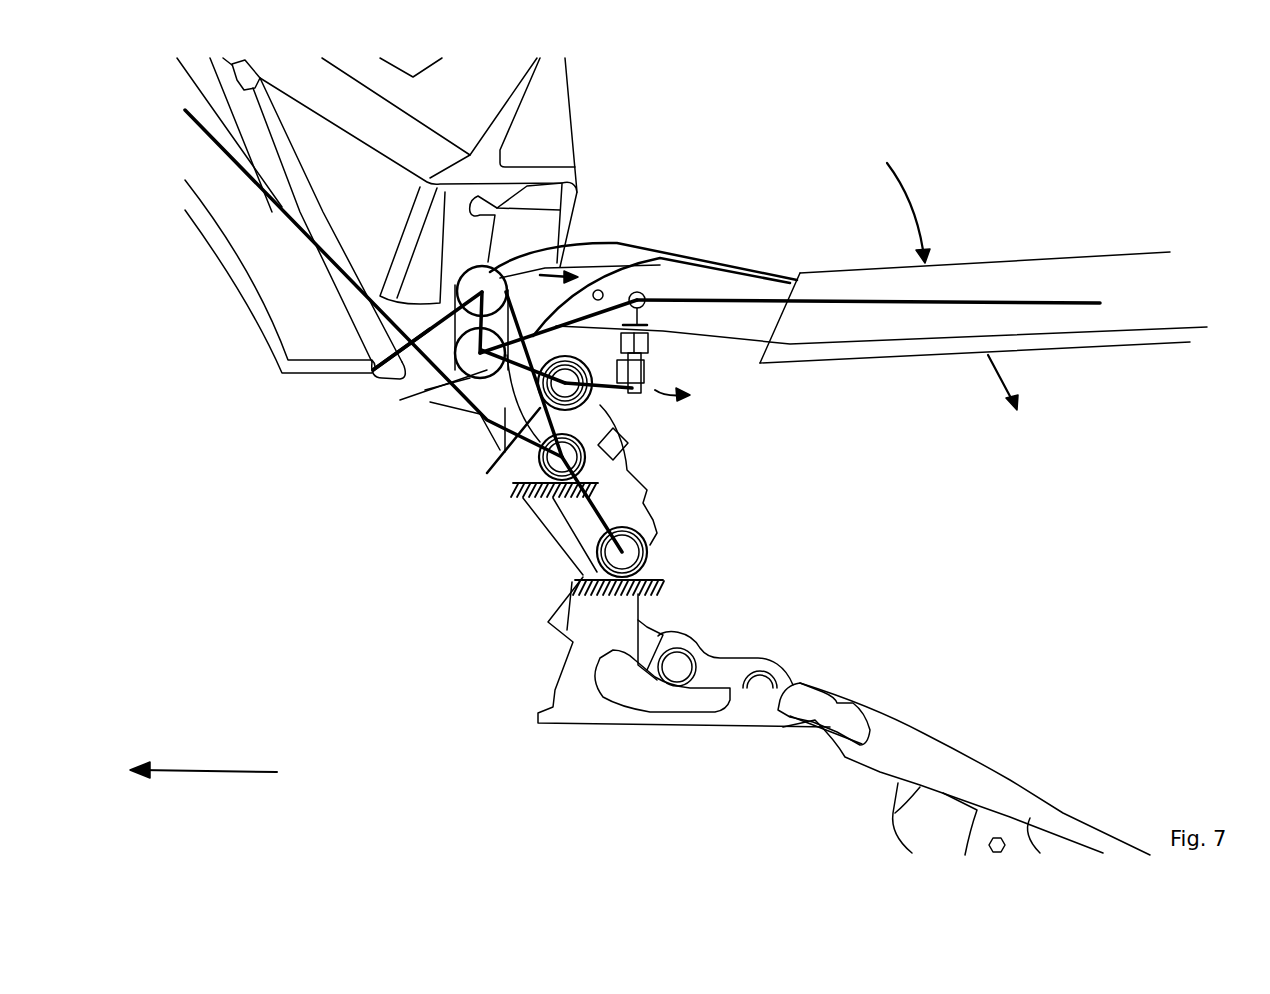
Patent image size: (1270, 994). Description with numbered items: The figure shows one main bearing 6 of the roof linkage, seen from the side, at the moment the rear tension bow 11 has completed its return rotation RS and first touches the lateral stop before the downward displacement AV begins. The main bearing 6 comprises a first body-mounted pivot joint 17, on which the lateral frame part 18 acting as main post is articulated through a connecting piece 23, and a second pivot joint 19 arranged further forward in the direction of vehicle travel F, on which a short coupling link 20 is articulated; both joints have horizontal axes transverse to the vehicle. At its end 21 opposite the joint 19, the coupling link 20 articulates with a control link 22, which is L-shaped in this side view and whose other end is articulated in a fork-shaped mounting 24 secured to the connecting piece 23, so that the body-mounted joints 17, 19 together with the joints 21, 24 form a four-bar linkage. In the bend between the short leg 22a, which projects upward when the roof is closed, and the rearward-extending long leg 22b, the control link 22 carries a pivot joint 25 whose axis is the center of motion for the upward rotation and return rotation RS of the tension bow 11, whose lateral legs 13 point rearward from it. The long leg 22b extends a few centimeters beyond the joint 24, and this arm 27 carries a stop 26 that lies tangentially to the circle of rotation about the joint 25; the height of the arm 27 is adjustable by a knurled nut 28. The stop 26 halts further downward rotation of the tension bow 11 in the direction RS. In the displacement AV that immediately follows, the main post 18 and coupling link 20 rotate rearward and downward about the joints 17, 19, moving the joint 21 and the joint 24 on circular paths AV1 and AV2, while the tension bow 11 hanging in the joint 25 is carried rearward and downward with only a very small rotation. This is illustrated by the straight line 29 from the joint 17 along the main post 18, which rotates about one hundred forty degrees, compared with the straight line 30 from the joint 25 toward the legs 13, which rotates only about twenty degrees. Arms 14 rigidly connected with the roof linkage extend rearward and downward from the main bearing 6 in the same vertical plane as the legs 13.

The main bearing 6 is at (740, 590).
The rear tension bow 11 is at (775, 255).
The lateral legs 13 is at (907, 330).
The arms 14 is at (917, 732).
The first body-mounted pivot joint 17 is at (622, 552).
The lateral frame part 18 is at (290, 270).
The second pivot joint 19 is at (537, 493).
The coupling link 20 is at (497, 458).
The end 21 is at (546, 270).
The control link 22 is at (622, 300).
The short leg 22a is at (430, 352).
The long leg 22b is at (493, 462).
The connecting piece 23 is at (443, 390).
The fork-shaped mounting 24 is at (545, 398).
The pivot joint 25 is at (443, 390).
The stop 26 is at (648, 335).
The arm 27 is at (622, 377).
The knurled nut 28 is at (647, 361).
The straight line 29 is at (345, 265).
The straight line 30 is at (645, 290).
The downward displacement AV is at (1003, 377).
The circular path AV1 is at (665, 395).
The circular path AV2 is at (548, 272).
The return rotation RS is at (912, 206).
The direction of vehicle travel F is at (210, 770).